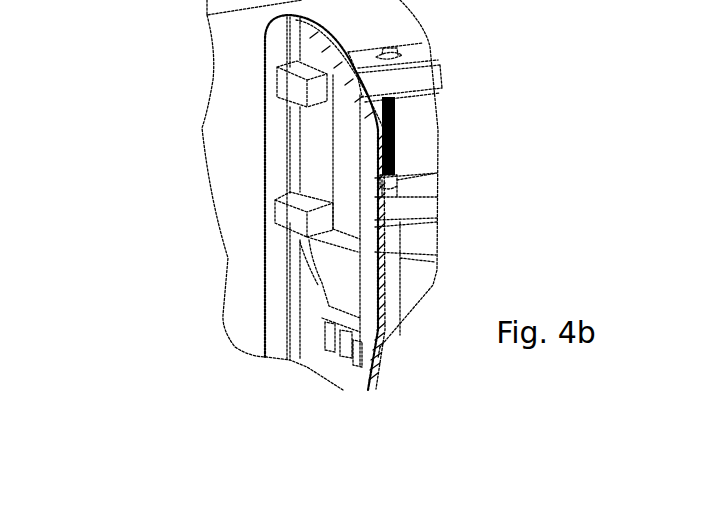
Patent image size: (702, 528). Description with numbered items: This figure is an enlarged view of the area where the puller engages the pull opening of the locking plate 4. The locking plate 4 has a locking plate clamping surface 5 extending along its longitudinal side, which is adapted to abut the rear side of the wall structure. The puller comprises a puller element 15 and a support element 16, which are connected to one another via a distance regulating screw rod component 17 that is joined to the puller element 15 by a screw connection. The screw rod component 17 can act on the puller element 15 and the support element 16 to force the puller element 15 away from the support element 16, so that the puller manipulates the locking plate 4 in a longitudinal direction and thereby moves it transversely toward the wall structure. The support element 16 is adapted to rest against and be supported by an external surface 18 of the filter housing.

The first locking plate 4 is at (300, 342).
The locking plate clamping surface 5 is at (257, 153).
The puller element 15 is at (418, 75).
The support element 16 is at (425, 210).
The distance regulating screw rod component 17 is at (393, 128).
The external surface 18 is at (418, 243).